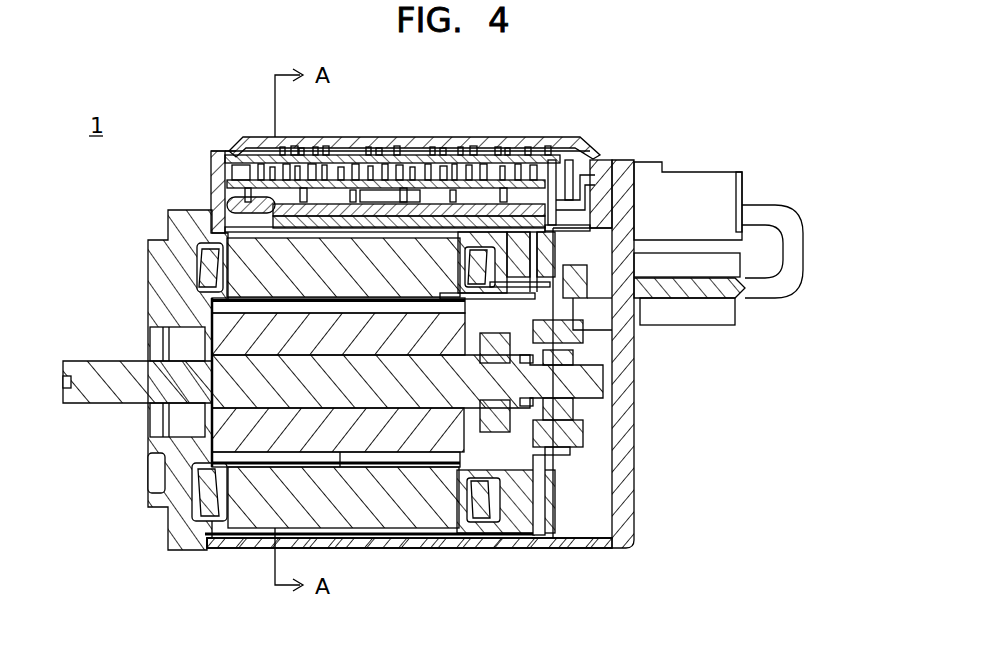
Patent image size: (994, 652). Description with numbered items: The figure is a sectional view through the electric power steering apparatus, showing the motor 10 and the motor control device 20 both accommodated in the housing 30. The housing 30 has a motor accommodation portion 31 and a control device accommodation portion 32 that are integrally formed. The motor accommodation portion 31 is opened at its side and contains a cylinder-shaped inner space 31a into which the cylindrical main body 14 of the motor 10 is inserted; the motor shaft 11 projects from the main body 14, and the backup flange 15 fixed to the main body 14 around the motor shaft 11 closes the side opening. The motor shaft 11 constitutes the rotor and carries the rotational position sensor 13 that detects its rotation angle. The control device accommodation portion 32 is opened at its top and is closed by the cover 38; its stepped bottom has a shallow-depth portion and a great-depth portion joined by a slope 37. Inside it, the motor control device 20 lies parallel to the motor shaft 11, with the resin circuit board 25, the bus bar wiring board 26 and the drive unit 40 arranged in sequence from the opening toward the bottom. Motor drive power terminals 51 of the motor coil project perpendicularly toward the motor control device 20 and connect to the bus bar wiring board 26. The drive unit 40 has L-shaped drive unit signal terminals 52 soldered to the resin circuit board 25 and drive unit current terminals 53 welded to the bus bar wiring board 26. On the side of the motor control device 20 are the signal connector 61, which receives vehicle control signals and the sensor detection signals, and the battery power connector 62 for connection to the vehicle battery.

The motor 10 is at (261, 417).
The motor shaft 11 is at (85, 385).
The rotational position sensor 13 is at (573, 437).
The main body 14 is at (369, 522).
The backup flange 15 is at (470, 522).
The motor control device 20 is at (255, 148).
The resin circuit board 25 is at (345, 160).
The bus bar wiring board 26 is at (403, 166).
The housing 30 is at (483, 355).
The motor accommodation portion 31 is at (636, 415).
The inner space 31a is at (246, 534).
The control device accommodation portion 32 is at (625, 207).
The slope 37 is at (415, 546).
The cover 38 is at (438, 137).
The drive unit 40 is at (250, 205).
The motor drive power terminals 51 is at (540, 165).
The drive unit signal terminals 52 is at (372, 165).
The drive unit current terminals 53 is at (474, 163).
The signal connector 61 is at (698, 165).
The battery power connector 62 is at (722, 322).